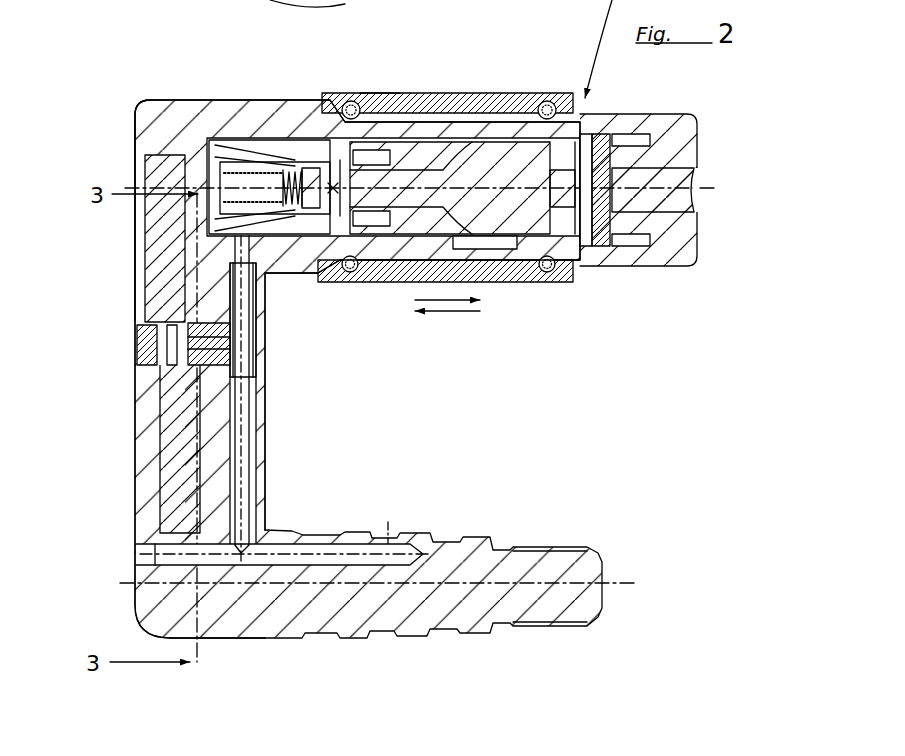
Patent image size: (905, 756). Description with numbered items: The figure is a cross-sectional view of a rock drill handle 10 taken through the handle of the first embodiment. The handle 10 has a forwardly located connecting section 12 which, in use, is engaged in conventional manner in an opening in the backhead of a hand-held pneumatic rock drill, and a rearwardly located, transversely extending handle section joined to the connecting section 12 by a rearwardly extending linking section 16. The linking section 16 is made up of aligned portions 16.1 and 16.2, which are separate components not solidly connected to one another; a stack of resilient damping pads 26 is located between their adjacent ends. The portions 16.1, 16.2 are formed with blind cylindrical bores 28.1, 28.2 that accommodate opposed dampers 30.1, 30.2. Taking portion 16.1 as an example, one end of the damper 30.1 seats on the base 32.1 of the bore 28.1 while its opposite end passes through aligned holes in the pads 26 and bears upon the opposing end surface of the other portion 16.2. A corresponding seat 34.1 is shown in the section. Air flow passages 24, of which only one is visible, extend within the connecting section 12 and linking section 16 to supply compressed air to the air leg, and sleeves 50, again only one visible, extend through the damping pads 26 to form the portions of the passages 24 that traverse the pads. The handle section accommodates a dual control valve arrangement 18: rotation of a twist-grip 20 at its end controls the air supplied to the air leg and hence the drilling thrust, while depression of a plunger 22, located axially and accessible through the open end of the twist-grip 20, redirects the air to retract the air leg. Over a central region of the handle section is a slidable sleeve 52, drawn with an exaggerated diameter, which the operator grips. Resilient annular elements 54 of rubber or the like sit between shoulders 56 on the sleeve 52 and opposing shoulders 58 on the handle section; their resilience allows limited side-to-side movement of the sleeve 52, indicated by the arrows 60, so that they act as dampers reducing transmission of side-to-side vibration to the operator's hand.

The handle 10 is at (232, 92).
The connecting section 12 is at (446, 527).
The linking section 16 is at (122, 455).
The first portion of linking section 16.1 is at (266, 316).
The second portion of linking section 16.2 is at (266, 456).
The dual control valve arrangement 18 is at (512, 252).
The twist-grip 20 is at (641, 114).
The plunger 22 is at (691, 200).
The air flow passages 24 is at (250, 410).
The resilient damping pads 26 is at (137, 350).
The blind cylindrical bore 28.1 is at (142, 268).
The blind cylindrical bore 28.2 is at (155, 520).
The damper 30.1 is at (162, 236).
The damper 30.2 is at (176, 497).
The base of bore 32.1 is at (148, 150).
The contact element 34.1 is at (160, 366).
The sleeve 50 is at (258, 372).
The sleeve 52 is at (460, 93).
The resilient annular elements 54 is at (346, 101).
The shoulders on the sleeve 56 is at (373, 94).
The shoulders on the handle section 58 is at (344, 281).
The arrows 60 is at (447, 318).